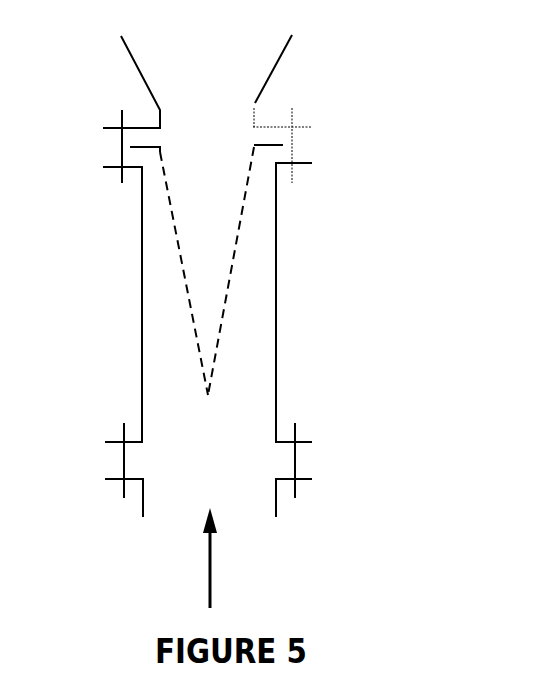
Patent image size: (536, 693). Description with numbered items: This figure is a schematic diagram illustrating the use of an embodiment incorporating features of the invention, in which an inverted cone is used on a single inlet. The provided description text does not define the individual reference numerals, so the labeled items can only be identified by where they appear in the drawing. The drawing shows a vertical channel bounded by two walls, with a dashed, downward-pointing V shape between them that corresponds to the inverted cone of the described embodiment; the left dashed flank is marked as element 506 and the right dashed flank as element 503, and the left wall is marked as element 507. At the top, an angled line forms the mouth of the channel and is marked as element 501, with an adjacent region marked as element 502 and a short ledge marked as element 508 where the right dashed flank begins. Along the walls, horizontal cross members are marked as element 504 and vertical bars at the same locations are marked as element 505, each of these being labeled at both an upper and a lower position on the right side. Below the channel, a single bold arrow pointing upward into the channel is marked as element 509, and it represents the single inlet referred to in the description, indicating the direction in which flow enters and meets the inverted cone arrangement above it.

The inlet guide wall 501 is at (295, 55).
The junction region 502 is at (277, 107).
The right dashed flow boundary 503 is at (257, 223).
The flange plate 504 is at (313, 146).
The cross bar 505 is at (315, 107).
The left dashed flow boundary 506 is at (177, 172).
The left channel wall 507 is at (173, 213).
The ledge 508 is at (283, 144).
The flow direction arrow 509 is at (213, 572).